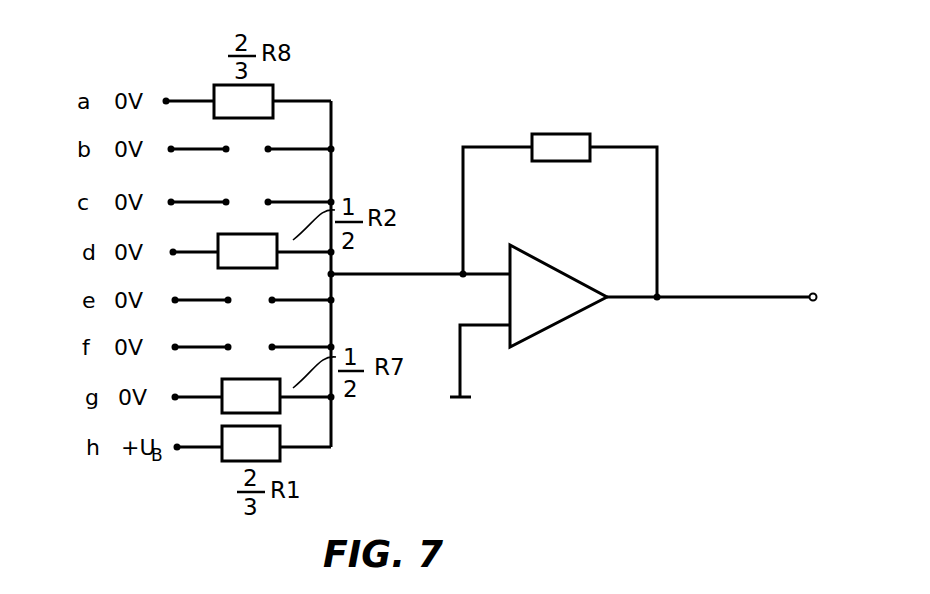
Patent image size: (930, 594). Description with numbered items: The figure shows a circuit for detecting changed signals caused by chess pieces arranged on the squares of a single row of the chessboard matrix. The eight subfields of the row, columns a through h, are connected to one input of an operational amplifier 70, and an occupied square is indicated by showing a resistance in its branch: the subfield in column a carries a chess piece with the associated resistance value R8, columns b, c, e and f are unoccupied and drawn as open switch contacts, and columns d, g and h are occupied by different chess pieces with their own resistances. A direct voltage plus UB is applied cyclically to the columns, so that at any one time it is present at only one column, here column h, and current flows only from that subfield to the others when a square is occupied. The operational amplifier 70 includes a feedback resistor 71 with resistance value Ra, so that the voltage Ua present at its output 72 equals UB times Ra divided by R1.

The operational amplifier 70 is at (537, 318).
The resistor 71 is at (563, 141).
The output 72 is at (815, 293).